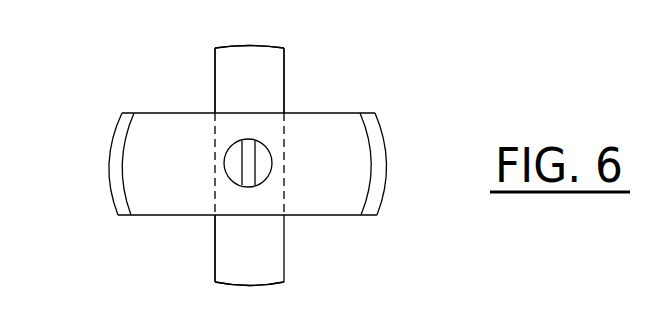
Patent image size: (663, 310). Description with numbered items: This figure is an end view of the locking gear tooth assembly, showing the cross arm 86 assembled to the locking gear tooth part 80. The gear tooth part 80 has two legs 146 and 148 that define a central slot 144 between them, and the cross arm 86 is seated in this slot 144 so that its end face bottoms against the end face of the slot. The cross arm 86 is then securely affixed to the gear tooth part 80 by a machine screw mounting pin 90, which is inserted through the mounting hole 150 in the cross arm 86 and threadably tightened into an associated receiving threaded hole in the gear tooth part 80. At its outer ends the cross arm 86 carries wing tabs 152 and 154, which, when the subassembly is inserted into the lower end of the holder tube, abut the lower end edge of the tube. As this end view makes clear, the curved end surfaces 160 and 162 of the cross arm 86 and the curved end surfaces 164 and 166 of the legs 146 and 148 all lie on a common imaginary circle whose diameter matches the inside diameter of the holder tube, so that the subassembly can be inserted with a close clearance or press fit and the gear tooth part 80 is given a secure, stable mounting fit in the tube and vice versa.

The locking gear tooth part 80 is at (251, 44).
The cross arm 86 is at (170, 108).
The machine screw mounting pin 90 is at (272, 155).
The central slot 144 is at (243, 113).
The leg 146 is at (278, 77).
The leg 148 is at (223, 241).
The mounting hole 150 is at (226, 162).
The wing tab 152 is at (115, 140).
The wing tab 154 is at (380, 145).
The curved end surface 160 is at (124, 182).
The curved end surface 162 is at (367, 190).
The curved end surface 164 is at (276, 46).
The curved end surface 166 is at (283, 283).